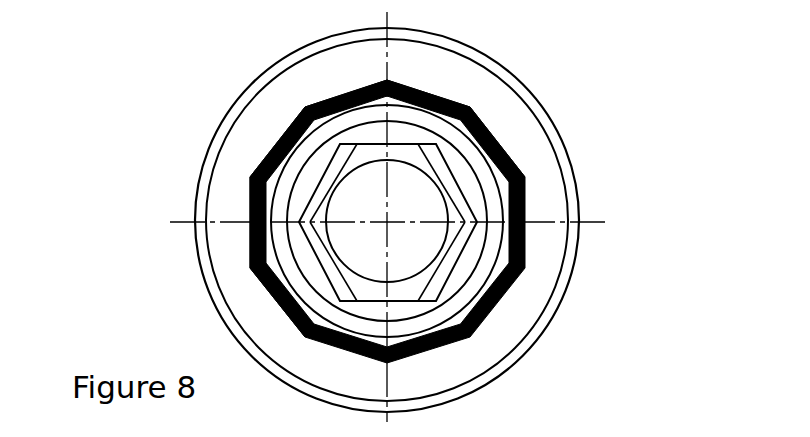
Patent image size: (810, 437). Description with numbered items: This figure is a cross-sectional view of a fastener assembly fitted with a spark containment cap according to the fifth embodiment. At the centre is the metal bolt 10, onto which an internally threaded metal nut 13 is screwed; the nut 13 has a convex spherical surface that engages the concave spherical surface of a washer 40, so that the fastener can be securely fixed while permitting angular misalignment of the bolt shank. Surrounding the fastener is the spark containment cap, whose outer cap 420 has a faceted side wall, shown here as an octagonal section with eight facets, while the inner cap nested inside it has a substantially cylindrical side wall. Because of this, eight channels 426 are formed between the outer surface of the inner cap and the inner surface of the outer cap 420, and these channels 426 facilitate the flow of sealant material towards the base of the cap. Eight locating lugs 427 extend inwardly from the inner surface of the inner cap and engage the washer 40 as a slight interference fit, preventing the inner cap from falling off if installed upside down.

The metal bolt 10 is at (420, 207).
The internally threaded metal nut 13 is at (467, 265).
The washer 40 is at (477, 288).
The outer cap 420 is at (517, 160).
The channels 426 is at (473, 110).
The locating lugs 427 is at (268, 298).